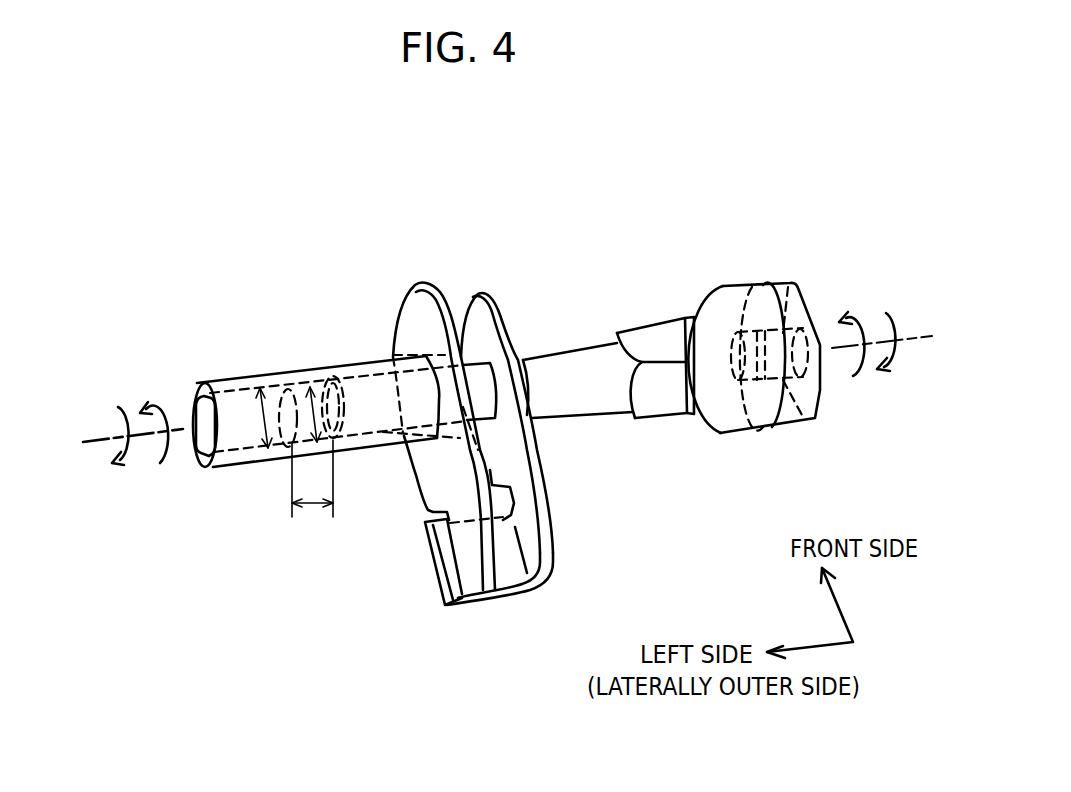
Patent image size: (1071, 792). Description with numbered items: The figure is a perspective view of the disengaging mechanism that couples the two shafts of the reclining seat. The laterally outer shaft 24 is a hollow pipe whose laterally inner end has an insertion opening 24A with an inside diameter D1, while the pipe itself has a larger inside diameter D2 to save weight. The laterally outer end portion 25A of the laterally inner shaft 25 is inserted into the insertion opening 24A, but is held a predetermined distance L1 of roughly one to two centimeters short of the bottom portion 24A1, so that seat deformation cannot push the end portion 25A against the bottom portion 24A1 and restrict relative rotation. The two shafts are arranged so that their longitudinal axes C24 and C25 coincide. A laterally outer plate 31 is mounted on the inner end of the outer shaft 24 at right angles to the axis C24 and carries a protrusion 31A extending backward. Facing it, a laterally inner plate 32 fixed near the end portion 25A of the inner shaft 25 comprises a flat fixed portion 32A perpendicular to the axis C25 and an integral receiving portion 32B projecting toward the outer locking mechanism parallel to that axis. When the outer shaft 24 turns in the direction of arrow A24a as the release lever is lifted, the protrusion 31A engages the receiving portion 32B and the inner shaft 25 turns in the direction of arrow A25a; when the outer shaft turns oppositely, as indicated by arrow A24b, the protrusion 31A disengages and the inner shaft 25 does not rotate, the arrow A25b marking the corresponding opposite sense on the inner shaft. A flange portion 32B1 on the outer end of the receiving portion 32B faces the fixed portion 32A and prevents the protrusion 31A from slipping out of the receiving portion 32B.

The laterally outer shaft 24 is at (232, 469).
The insertion opening 24A is at (380, 357).
The bottom portion of the insertion opening 24A1 is at (266, 377).
The laterally inner shaft 25 is at (585, 346).
The laterally outer end portion of the laterally inner shaft 25A is at (325, 373).
The laterally outer plate 31 is at (410, 296).
The protrusion 31A is at (472, 542).
The laterally inner plate 32 is at (492, 460).
The fixed portion 32A is at (493, 303).
The receiving portion 32B is at (500, 566).
The flange portion 32B1 is at (435, 555).
The longitudinal axis of the laterally outer shaft C24 is at (97, 433).
The longitudinal axis of the laterally inner shaft C25 is at (918, 330).
The arrow A24a is at (124, 456).
The arrow A24b is at (161, 415).
The arrow A25a is at (902, 361).
The rotation direction of rod A25b is at (846, 328).
The inside diameter of the insertion opening D1 is at (311, 403).
The inside diameter of the laterally outer shaft D2 is at (252, 418).
The predetermined distance L1 is at (312, 478).